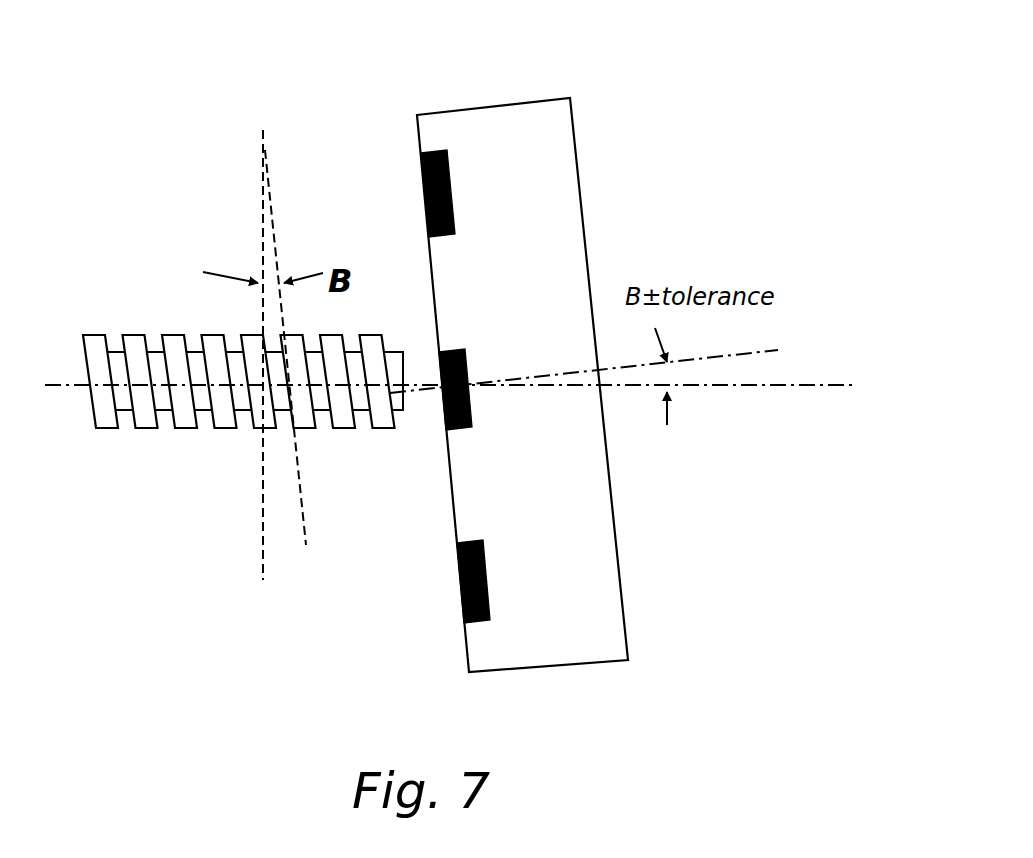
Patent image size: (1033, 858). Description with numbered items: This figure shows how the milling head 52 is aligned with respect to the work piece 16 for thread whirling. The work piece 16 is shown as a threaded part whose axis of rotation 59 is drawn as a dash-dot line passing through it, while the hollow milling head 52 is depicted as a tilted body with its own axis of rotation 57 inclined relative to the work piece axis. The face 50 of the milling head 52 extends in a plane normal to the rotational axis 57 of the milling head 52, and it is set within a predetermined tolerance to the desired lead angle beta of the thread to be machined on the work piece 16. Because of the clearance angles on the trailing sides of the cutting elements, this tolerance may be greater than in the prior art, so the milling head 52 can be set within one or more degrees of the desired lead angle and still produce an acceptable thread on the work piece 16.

The work piece 16 is at (231, 423).
The face 50 is at (418, 140).
The milling head 52 is at (582, 138).
The axis of rotation of the milling head 57 is at (610, 347).
The axis of rotation of the work-piece 59 is at (450, 416).